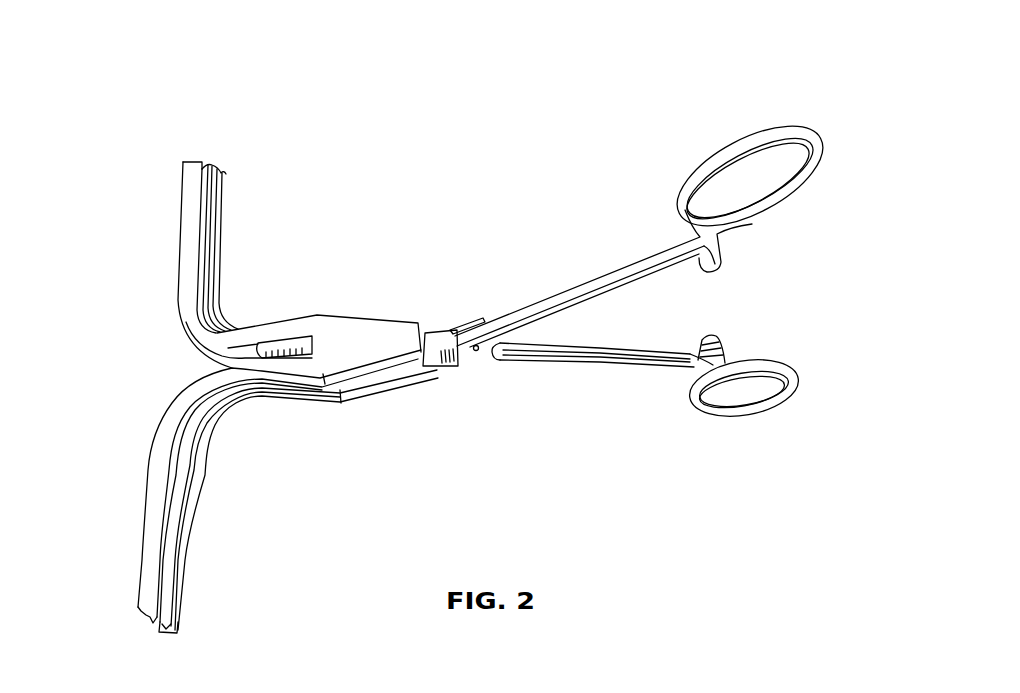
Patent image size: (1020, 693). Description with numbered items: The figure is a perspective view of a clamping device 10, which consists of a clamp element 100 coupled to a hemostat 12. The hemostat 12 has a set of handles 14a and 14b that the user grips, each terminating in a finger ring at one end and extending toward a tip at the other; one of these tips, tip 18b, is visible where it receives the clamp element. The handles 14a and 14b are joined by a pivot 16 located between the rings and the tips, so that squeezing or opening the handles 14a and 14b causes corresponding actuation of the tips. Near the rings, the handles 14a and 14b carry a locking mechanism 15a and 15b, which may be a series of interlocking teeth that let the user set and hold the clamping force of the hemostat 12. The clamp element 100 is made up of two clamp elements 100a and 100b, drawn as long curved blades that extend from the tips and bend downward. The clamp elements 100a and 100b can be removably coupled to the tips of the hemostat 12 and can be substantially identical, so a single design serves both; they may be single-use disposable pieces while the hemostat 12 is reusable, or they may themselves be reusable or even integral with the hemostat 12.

The clamping device 10 is at (840, 54).
The hemostat 12 is at (524, 298).
The handle 14a is at (757, 222).
The handle 14b is at (753, 413).
The locking mechanism 15a is at (707, 262).
The locking mechanism 15b is at (723, 339).
The pivot 16 is at (479, 352).
The tip 18b is at (293, 352).
The clamp element 100 is at (156, 242).
The clamp element 100a is at (185, 530).
The clamp element 100b is at (140, 565).